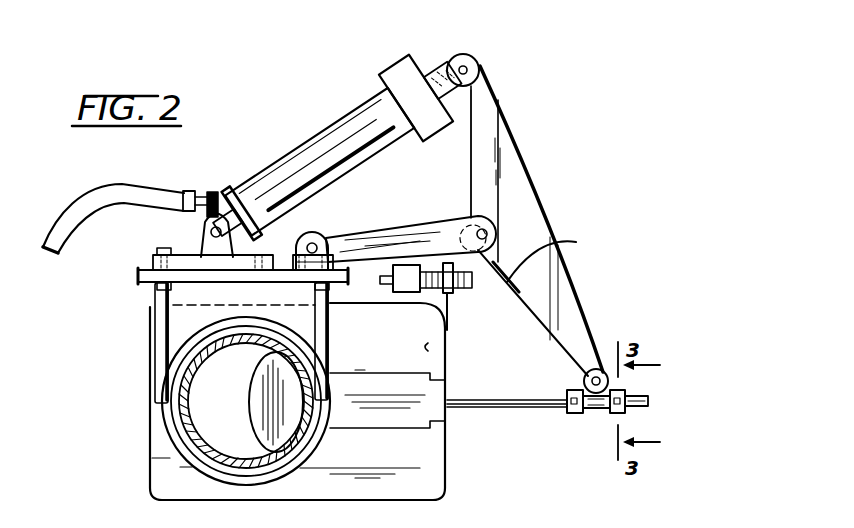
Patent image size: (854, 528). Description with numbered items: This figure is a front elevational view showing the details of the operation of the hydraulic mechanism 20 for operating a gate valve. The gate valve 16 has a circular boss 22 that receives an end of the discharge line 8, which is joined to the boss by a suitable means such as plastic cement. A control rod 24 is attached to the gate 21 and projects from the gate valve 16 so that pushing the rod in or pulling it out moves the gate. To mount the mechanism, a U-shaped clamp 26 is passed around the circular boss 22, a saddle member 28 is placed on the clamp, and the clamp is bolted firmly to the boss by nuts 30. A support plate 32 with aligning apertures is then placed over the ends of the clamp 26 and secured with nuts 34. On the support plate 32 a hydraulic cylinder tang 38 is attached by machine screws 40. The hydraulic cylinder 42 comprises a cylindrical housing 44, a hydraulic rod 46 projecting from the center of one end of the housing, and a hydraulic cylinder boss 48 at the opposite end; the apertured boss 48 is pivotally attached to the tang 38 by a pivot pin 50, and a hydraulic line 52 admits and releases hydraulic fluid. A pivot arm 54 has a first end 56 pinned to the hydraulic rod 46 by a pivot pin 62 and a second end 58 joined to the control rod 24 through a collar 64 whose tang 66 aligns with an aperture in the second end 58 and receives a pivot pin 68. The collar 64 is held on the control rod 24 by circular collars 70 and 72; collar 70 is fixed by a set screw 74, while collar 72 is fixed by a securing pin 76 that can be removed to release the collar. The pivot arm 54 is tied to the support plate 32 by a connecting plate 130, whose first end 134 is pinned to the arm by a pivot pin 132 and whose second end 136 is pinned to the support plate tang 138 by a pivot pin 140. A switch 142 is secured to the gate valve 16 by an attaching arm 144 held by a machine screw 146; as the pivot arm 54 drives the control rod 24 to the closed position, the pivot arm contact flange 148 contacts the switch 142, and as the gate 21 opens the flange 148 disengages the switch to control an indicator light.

The discharge line 8 is at (180, 420).
The gate valve 16 is at (436, 463).
The hydraulic mechanism 20 is at (580, 127).
The gate 21 is at (260, 391).
The circular boss 22 is at (187, 445).
The control rod 24 is at (500, 398).
The clamp 26 is at (162, 427).
The saddle member 28 is at (190, 325).
The nuts 30 is at (152, 286).
The support plate 32 is at (138, 276).
The nuts 34 is at (158, 257).
The hydraulic cylinder tang 38 is at (213, 260).
The machine screws 40 is at (266, 250).
The hydraulic cylinder 42 is at (328, 137).
The cylindrical housing 44 is at (354, 120).
The hydraulic rod 46 is at (437, 76).
The hydraulic cylinder boss 48 is at (213, 190).
The pivot pin 50 is at (210, 192).
The hydraulic line 52 is at (78, 203).
The pivot arm 54 is at (532, 205).
The first end 56 is at (491, 95).
The second end 58 is at (590, 345).
The pivot pin 62 is at (472, 64).
The collar 64 is at (598, 416).
The tang 66 is at (586, 382).
The pivot pin 68 is at (604, 393).
The circular collar 70 is at (576, 416).
The circular collar 72 is at (625, 413).
The set screw 74 is at (567, 411).
The securing pin 76 is at (644, 398).
The connecting plate 130 is at (414, 236).
The pivot pin 132 is at (485, 226).
The first end 134 is at (474, 232).
The second end 136 is at (362, 233).
The support plate tang 138 is at (300, 262).
The pivot pin 140 is at (316, 236).
The switch 142 is at (462, 289).
The attaching arm 144 is at (447, 330).
The machine screw 146 is at (428, 347).
The pivot arm contact flange 148 is at (556, 248).